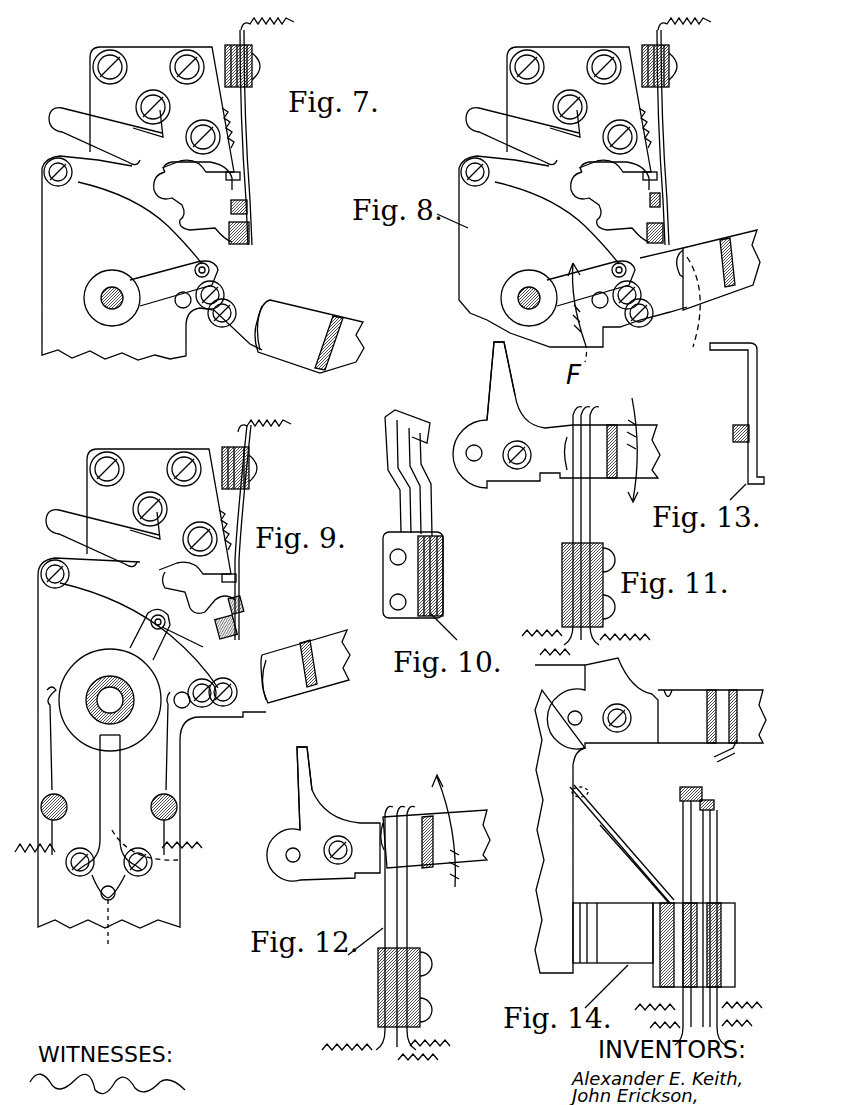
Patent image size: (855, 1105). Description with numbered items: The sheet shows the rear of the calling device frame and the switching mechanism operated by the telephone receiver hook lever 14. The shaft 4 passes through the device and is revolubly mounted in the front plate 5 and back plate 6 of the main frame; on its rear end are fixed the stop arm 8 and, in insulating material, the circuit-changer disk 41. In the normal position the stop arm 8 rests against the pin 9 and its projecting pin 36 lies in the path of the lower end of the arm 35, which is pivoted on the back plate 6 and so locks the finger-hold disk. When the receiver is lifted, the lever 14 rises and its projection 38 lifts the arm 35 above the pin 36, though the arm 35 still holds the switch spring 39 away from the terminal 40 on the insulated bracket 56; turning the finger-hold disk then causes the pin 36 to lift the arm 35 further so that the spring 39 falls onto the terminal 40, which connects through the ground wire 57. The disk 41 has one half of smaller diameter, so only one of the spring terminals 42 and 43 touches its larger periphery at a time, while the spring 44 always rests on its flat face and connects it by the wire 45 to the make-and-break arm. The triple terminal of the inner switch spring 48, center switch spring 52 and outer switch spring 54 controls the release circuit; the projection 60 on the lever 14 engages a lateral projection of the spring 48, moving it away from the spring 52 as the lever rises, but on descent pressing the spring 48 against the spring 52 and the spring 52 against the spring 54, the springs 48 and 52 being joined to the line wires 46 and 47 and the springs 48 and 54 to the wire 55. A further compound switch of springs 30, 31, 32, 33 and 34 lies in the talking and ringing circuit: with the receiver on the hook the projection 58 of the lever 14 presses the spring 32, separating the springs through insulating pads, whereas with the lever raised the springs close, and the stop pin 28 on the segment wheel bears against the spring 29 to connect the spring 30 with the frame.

In FIG. 7, the shaft 4 is at (111, 288).
In FIG. 8, the shaft 4 is at (529, 290).
In FIG. 9, the shaft 4 is at (108, 690).
In FIG. 14, the front plate 5 is at (552, 764).
In FIG. 7, the back plate 6 is at (176, 357).
In FIG. 8, the back plate 6 is at (495, 262).
In FIG. 9, the back plate 6 is at (172, 783).
In FIG. 7, the stop arm 8 is at (165, 284).
In FIG. 8, the stop arm 8 is at (578, 276).
In FIG. 9, the stop arm 8 is at (146, 640).
In FIG. 7, the pin 9 is at (182, 306).
In FIG. 8, the pin 9 is at (630, 295).
In FIG. 9, the pin 9 is at (186, 707).
In FIG. 7, the telephone receiver hook lever 14 is at (298, 352).
In FIG. 8, the telephone receiver hook lever 14 is at (713, 288).
In FIG. 9, the telephone receiver hook lever 14 is at (298, 682).
In FIG. 11, the telephone receiver hook lever 14 is at (474, 470).
In FIG. 12, the telephone receiver hook lever 14 is at (476, 852).
In FIG. 14, the telephone receiver hook lever 14 is at (682, 708).
In FIG. 14, the stop pin 28 is at (588, 793).
In FIG. 14, the spring 29 is at (632, 828).
In FIG. 14, the switch spring 30 is at (652, 855).
In FIG. 14, the switch spring 31 is at (720, 796).
In FIG. 14, the switch spring 32 is at (692, 818).
In FIG. 14, the switch spring 33 is at (712, 852).
In FIG. 14, the switch spring 34 is at (720, 876).
In FIG. 7, the arm 35 is at (108, 190).
In FIG. 8, the arm 35 is at (525, 185).
In FIG. 9, the arm 35 is at (88, 585).
In FIG. 7, the projecting pin 36 is at (208, 273).
In FIG. 8, the projecting pin 36 is at (632, 258).
In FIG. 9, the projecting pin 36 is at (177, 645).
In FIG. 7, the projection 38 is at (252, 213).
In FIG. 8, the projection 38 is at (665, 195).
In FIG. 9, the projection 38 is at (240, 592).
In FIG. 11, the projection 38 is at (493, 350).
In FIG. 12, the projection 38 is at (304, 752).
In FIG. 13, the projection 38 is at (731, 347).
In FIG. 7, the switch spring 39 is at (249, 160).
In FIG. 8, the switch spring 39 is at (662, 148).
In FIG. 9, the switch spring 39 is at (244, 514).
In FIG. 7, the terminal 40 is at (241, 178).
In FIG. 8, the terminal 40 is at (660, 170).
In FIG. 9, the terminal 40 is at (240, 582).
In FIG. 9, the disk 41 is at (92, 738).
In FIG. 9, the spring terminal 42 is at (50, 693).
In FIG. 9, the spring terminal 43 is at (160, 715).
In FIG. 9, the spring 44 is at (168, 839).
In FIG. 9, the wire 45 is at (108, 945).
In FIG. 9, the line wire 46 is at (38, 901).
In FIG. 11, the line wire 46 is at (538, 640).
In FIG. 12, the line wire 46 is at (335, 1054).
In FIG. 9, the line wire 47 is at (238, 790).
In FIG. 11, the line wire 47 is at (545, 660).
In FIG. 12, the line wire 47 is at (430, 1062).
In FIG. 10, the inner switch spring 48 is at (430, 427).
In FIG. 11, the inner switch spring 48 is at (572, 500).
In FIG. 12, the inner switch spring 48 is at (383, 912).
In FIG. 10, the center switch spring 52 is at (392, 413).
In FIG. 11, the center switch spring 52 is at (580, 520).
In FIG. 12, the center switch spring 52 is at (400, 903).
In FIG. 10, the outer switch spring 54 is at (383, 438).
In FIG. 11, the outer switch spring 54 is at (591, 520).
In FIG. 12, the outer switch spring 54 is at (410, 932).
In FIG. 11, the wire 55 is at (650, 636).
In FIG. 12, the wire 55 is at (440, 1050).
In FIG. 7, the insulated bracket 56 is at (238, 52).
In FIG. 8, the insulated bracket 56 is at (655, 52).
In FIG. 9, the insulated bracket 56 is at (222, 452).
In FIG. 7, the ground wire 57 is at (288, 27).
In FIG. 8, the ground wire 57 is at (703, 27).
In FIG. 9, the ground wire 57 is at (265, 434).
In FIG. 14, the projection 58 is at (741, 766).
In FIG. 7, the projection 60 is at (274, 310).
In FIG. 8, the projection 60 is at (684, 298).
In FIG. 9, the projection 60 is at (272, 657).
In FIG. 11, the projection 60 is at (577, 414).
In FIG. 12, the projection 60 is at (385, 812).
In FIG. 14, the projection 60 is at (672, 690).